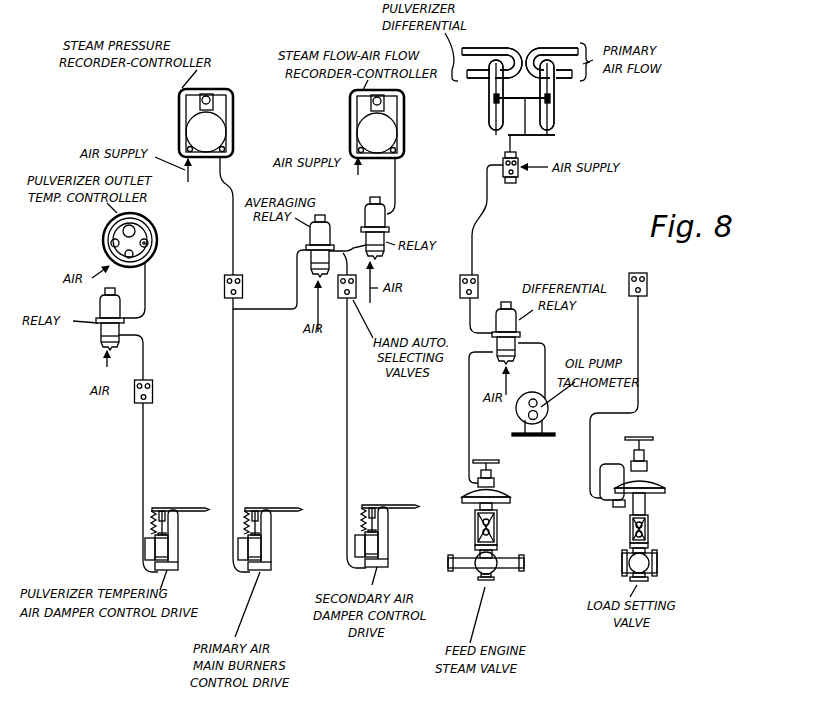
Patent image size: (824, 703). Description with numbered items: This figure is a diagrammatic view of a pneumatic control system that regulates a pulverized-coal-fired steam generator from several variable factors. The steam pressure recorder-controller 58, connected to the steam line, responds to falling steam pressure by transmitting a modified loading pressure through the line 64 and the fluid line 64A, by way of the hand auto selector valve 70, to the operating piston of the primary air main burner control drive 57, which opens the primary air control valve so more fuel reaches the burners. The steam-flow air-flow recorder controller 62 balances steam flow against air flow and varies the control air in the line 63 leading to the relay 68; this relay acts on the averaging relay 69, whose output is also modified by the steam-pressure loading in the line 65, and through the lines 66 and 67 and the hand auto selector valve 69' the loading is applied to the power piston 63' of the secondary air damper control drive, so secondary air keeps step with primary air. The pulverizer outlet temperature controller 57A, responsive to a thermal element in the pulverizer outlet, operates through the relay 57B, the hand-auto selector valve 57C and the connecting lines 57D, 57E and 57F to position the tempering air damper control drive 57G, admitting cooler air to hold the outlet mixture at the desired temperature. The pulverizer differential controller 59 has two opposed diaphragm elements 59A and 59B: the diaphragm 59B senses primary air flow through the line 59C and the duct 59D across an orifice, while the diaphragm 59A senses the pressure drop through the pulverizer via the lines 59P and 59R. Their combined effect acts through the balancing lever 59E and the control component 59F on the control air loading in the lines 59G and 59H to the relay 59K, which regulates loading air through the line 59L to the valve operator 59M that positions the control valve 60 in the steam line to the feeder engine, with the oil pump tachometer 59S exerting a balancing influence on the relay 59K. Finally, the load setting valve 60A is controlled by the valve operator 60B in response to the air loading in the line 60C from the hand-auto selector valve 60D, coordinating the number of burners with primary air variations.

The primary air main burner control drive 57 is at (275, 557).
The pulverizer outlet temperature controller 57A is at (102, 239).
The relay 57B is at (108, 328).
The hand-auto selector valve 57C is at (153, 392).
The connecting line 57D is at (146, 297).
The connecting line 57E is at (147, 348).
The connecting line 57F is at (147, 439).
The tempering air damper control drive 57G is at (134, 532).
The steam pressure recorder-controller 58 is at (230, 115).
The pulverizer differential controller 59 is at (574, 106).
The diaphragm element 59A is at (489, 113).
The diaphragm element 59B is at (554, 119).
The line 59C is at (574, 79).
The duct 59D is at (560, 47).
The balancing lever 59E is at (535, 136).
The control component 59F is at (518, 173).
The line 59G is at (484, 218).
The line 59H is at (479, 275).
The relay 59K is at (521, 331).
The line 59L is at (468, 430).
The valve operator 59M is at (505, 490).
The line 59P is at (470, 79).
The line 59R is at (483, 47).
The oil pump tachometer 59S is at (548, 413).
The control valve 60 is at (498, 553).
The load setting valve 60A is at (645, 562).
The valve operator 60B is at (655, 477).
The line 60C is at (639, 393).
The hand-auto selector valve 60D is at (649, 283).
The steam-flow air-flow recorder controller 62 is at (350, 115).
The line 63 is at (410, 185).
The power piston 63' is at (393, 536).
The line 64 is at (233, 240).
The fluid line 64A is at (235, 433).
The line 65 is at (267, 311).
The line 66 is at (349, 260).
The line 67 is at (348, 413).
The relay 68 is at (389, 211).
The averaging relay 69 is at (301, 246).
The hand auto selector valve 69' is at (337, 296).
The hand auto selector valve 70 is at (224, 282).